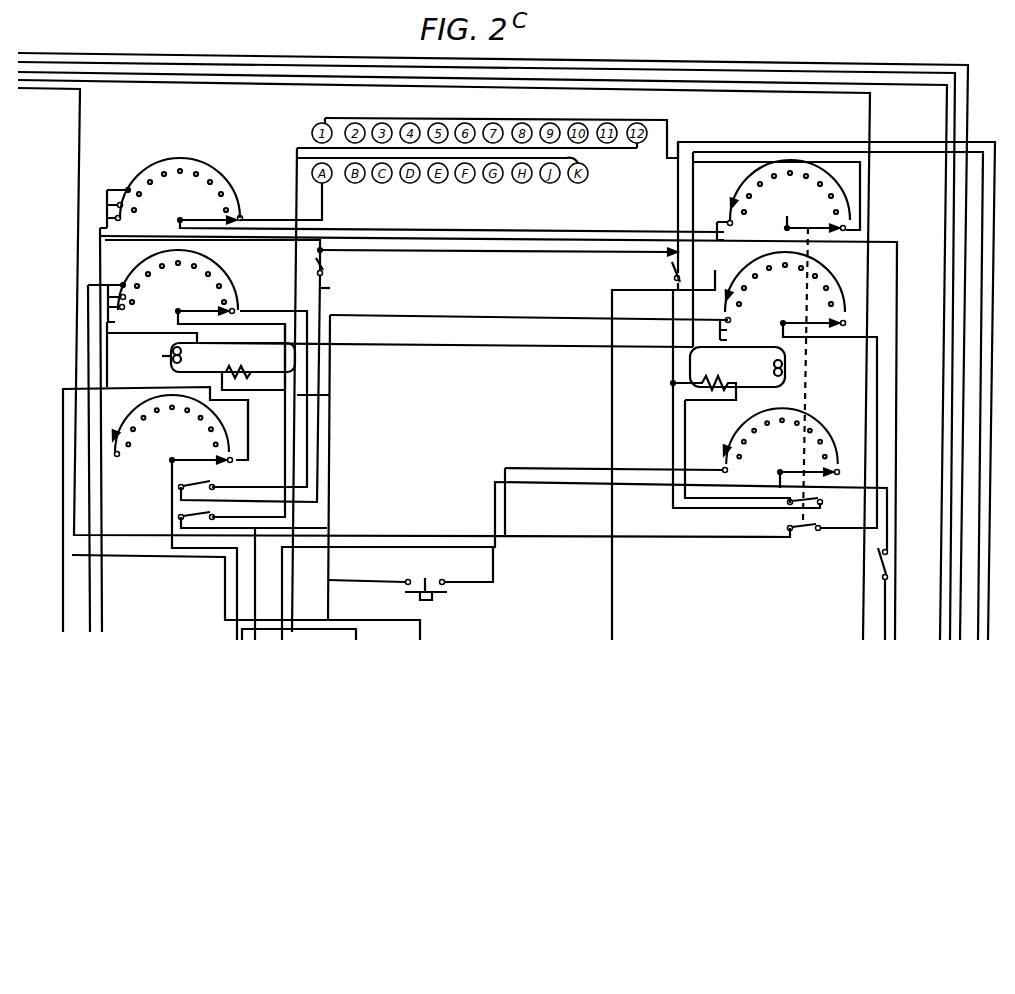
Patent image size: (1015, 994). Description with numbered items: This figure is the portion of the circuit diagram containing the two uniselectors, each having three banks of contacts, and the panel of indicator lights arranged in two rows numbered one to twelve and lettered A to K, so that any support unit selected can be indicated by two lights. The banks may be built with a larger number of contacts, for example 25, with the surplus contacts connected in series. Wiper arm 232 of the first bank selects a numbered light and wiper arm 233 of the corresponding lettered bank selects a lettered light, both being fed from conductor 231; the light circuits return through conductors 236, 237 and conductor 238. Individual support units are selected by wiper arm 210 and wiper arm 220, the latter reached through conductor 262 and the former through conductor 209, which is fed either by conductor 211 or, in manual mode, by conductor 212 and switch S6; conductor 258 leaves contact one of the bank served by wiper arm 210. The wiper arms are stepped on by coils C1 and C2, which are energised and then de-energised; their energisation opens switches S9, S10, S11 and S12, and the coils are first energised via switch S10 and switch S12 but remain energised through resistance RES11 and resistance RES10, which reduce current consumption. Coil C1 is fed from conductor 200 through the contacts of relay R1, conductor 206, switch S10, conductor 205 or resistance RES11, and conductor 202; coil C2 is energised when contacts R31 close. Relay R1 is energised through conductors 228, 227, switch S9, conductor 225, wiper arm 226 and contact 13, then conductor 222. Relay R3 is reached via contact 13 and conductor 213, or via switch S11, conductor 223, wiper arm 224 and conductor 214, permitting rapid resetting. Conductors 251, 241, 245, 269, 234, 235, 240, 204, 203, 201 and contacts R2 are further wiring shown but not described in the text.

The conductor 258 is at (152, 82).
The bus conductor 251 is at (222, 72).
The bus conductor 241 is at (270, 62).
The bus conductor 245 is at (338, 55).
The conductor 269 is at (80, 133).
The conductor to terminal strip 234 is at (672, 130).
The conductor 236 is at (632, 150).
The conductor 237 is at (590, 170).
The conductor from terminal A 235 is at (272, 222).
The wiper arm 233 is at (167, 186).
The conductor 231 is at (505, 228).
The conductor 240 is at (596, 234).
The relay contacts R31 is at (232, 371).
The conductor 204 is at (343, 289).
The conductor 238 is at (296, 283).
The conductor 200 is at (470, 250).
The relay R1 is at (682, 216).
The wiper arm 224 is at (197, 379).
The conductor 262 is at (64, 428).
The coil C2 is at (400, 352).
The resistance RES10 is at (253, 369).
The conductor 203 is at (272, 393).
The conductor 223 is at (280, 446).
The conductor 222 is at (330, 380).
The conductor 201 is at (524, 350).
The wiper arm 220 is at (177, 513).
The switch S12 is at (214, 484).
The switch S11 is at (178, 514).
The conductor 228 is at (270, 580).
The conductor 214 is at (452, 534).
The conductor 227 is at (566, 534).
The switch S6 is at (410, 573).
The conductor 211 is at (356, 560).
The conductor 212 is at (352, 590).
The conductor 209 is at (466, 590).
The conductor 213 is at (506, 610).
The wiper arm 232 is at (837, 394).
The conductor 202 is at (724, 212).
The contacts 25 is at (737, 298).
The wiper arm 226 is at (787, 326).
The contact 13 is at (713, 389).
The resistance RES11 is at (728, 373).
The coil C1 is at (784, 368).
The conductor 205 is at (696, 410).
The conductor 206 is at (672, 416).
The conductor 225 is at (877, 376).
The wiper arm 210 is at (778, 476).
The switch S10 is at (826, 503).
The switch S9 is at (804, 540).
The relay contact R2 is at (867, 594).